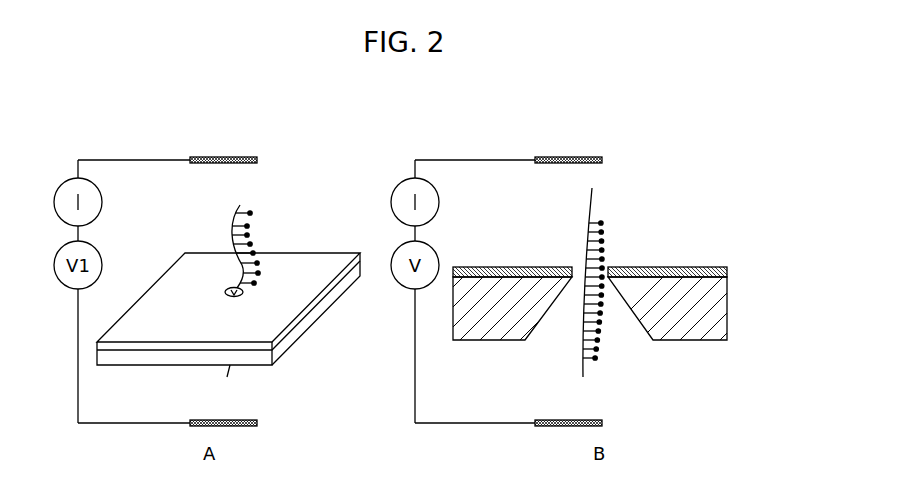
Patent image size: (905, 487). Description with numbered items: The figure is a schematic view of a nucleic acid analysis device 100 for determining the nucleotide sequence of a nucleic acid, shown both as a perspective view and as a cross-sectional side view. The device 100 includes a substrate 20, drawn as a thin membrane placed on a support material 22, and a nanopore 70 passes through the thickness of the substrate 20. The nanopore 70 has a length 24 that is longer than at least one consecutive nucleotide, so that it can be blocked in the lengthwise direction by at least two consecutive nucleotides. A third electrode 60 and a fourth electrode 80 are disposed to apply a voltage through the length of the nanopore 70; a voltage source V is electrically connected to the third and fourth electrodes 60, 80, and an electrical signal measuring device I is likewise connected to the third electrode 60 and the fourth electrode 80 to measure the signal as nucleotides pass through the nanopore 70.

The nucleic acid analysis device 100 is at (92, 142).
The third electrode 60 is at (250, 158).
The fourth electrode 80 is at (260, 420).
The nanopore 70 is at (232, 288).
The substrate 20 is at (332, 290).
The support material 22 is at (312, 320).
The length 24 is at (735, 253).